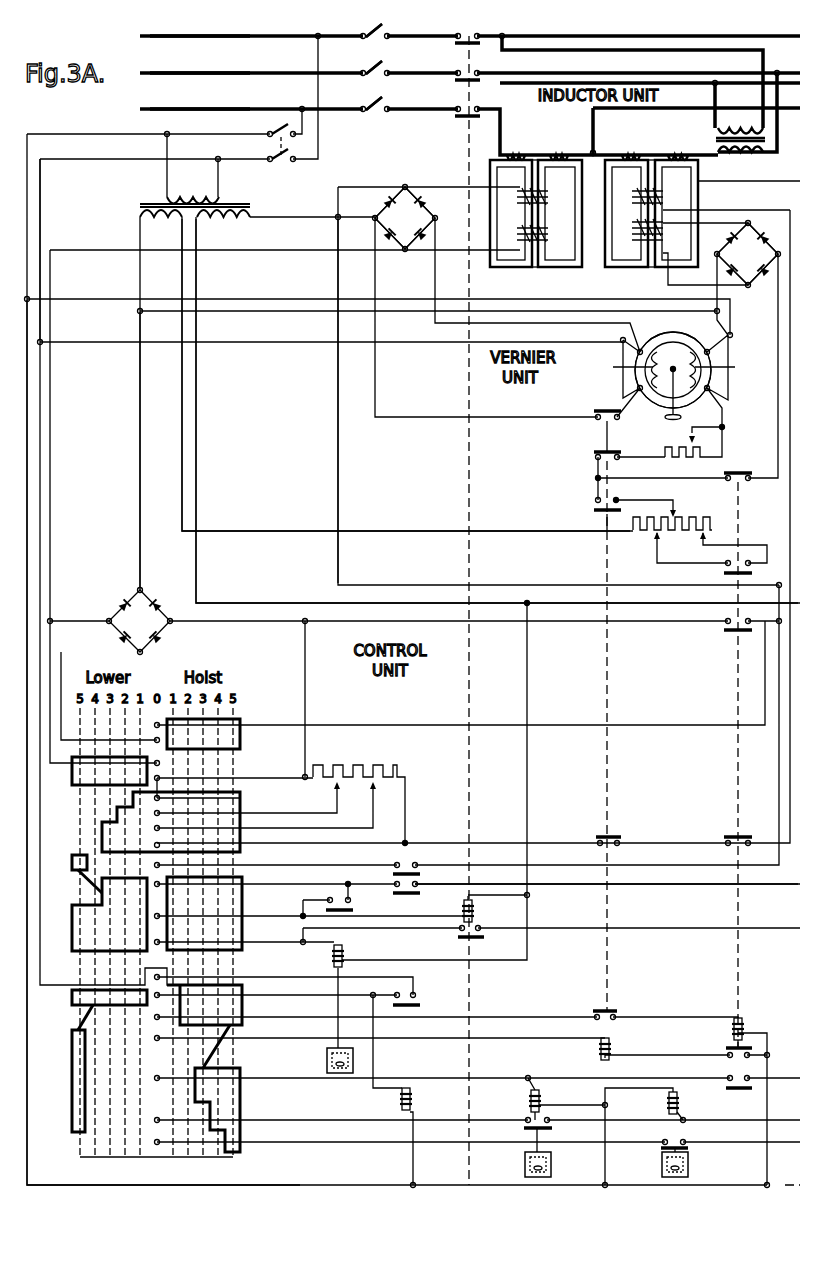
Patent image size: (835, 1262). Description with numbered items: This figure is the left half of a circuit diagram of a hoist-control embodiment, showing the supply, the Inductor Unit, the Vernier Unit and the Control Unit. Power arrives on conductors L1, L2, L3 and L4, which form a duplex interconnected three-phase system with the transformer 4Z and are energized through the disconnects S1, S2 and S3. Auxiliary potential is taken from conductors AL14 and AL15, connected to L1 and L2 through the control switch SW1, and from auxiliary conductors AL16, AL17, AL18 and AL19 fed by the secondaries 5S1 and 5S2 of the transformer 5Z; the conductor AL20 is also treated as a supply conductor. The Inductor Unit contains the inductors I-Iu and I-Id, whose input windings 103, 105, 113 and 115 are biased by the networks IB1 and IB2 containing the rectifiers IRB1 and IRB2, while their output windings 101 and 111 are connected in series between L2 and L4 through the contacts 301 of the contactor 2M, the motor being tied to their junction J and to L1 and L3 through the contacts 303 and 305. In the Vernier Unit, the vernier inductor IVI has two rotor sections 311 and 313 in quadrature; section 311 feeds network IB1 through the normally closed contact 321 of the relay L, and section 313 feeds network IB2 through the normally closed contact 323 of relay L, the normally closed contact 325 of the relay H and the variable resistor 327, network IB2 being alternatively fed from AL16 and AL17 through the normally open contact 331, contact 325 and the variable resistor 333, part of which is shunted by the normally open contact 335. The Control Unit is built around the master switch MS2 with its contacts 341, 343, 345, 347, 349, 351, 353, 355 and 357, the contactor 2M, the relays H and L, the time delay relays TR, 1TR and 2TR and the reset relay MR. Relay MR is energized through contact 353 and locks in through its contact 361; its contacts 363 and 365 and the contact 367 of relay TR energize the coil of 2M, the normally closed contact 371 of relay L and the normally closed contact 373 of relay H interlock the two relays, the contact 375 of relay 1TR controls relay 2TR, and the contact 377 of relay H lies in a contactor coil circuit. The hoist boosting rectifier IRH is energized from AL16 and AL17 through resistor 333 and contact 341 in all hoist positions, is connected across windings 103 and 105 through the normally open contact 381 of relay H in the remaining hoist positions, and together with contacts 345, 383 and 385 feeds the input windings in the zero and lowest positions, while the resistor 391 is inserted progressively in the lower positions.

The output winding 101 is at (512, 146).
The input winding 103 is at (556, 228).
The input winding 105 is at (548, 197).
The output winding 111 is at (633, 152).
The input winding 113 is at (632, 195).
The winding 115 is at (632, 232).
The contacts 301 is at (452, 113).
The contact 303 is at (452, 40).
The contact 305 is at (452, 77).
The rotor section 311 is at (647, 370).
The rotor section 313 is at (726, 370).
The normally closed contact 321 is at (601, 404).
The normally closed contact 323 is at (594, 452).
The normally closed contact 325 is at (728, 472).
The variable resistor 327 is at (707, 447).
The normally open contact 331 is at (594, 500).
The variable resistor 333 is at (698, 505).
The normally open contact 335 is at (740, 560).
The contact 341 is at (240, 719).
The contact 343 is at (72, 777).
The contact 345 is at (240, 797).
The contact 347 is at (70, 855).
The contact 349 is at (72, 905).
The contact 351 is at (240, 950).
The contact 353 is at (72, 996).
The contact 355 is at (72, 1072).
The contact 357 is at (240, 1100).
The contact 361 is at (418, 999).
The contact 363 is at (420, 886).
The contact 365 is at (408, 862).
The contact 367 is at (350, 905).
The normally closed contact 371 is at (612, 1010).
The normally closed contact 373 is at (726, 1050).
The contact 375 is at (526, 1116).
The contact 377 is at (728, 1090).
The normally open contact 381 is at (728, 631).
The contact 383 is at (614, 836).
The contact 385 is at (744, 828).
The resistor 391 is at (343, 765).
The conductor L1 is at (183, 40).
The conductor L2 is at (183, 113).
The conductor L3 is at (183, 77).
The conductor L4 is at (678, 152).
The disconnect S1 is at (370, 39).
The disconnect S2 is at (370, 112).
The disconnect S3 is at (370, 76).
The control switch SW1 is at (289, 158).
The transformer 5Z is at (167, 196).
The secondary 5S1 is at (168, 226).
The secondary 5S2 is at (226, 226).
The transformer 4Z is at (740, 156).
The rectifier IRB1 is at (416, 196).
The rectifier IRB2 is at (758, 287).
The biasing network IB1 is at (417, 218).
The biasing network IB2 is at (725, 254).
The hoist boosting rectifier IRH is at (140, 621).
The vernier inductor IVI is at (669, 386).
The junction J is at (597, 145).
The inductor I-Iu is at (512, 268).
The inductor I-Id is at (662, 268).
The master switch MS2 is at (156, 1168).
The time delay relay TR is at (344, 950).
The contactor 2M is at (476, 911).
The reset relay MR is at (400, 1100).
The time delay relay 1TR is at (541, 1094).
The time delay relay 2TR is at (667, 1102).
The relay H is at (744, 1022).
The relay L is at (611, 1044).
The conductor AL14 is at (48, 186).
The conductor AL15 is at (27, 215).
The conductor AL16 is at (212, 531).
The conductor AL17 is at (140, 503).
The conductor AL18 is at (338, 428).
The conductor AL19 is at (196, 583).
The conductor AL20 is at (652, 885).